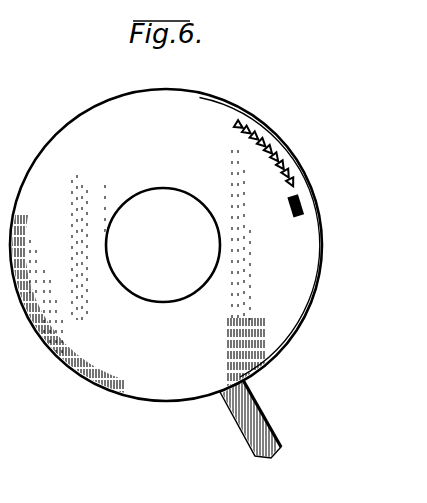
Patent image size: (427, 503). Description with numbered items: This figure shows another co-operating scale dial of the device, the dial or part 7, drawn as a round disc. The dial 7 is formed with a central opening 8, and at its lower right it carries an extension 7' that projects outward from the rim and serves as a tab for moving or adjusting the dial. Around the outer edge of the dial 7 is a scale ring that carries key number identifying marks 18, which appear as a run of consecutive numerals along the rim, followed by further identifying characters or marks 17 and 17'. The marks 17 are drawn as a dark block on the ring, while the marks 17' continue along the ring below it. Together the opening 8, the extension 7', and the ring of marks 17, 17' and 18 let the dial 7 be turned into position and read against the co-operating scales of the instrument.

The dial 7 is at (166, 245).
The extension 7' is at (270, 420).
The opening 8 is at (138, 292).
The identifying characters or marks 17 is at (322, 206).
The identifying characters or marks 17' is at (299, 214).
The key number identifying marks 18 is at (193, 103).